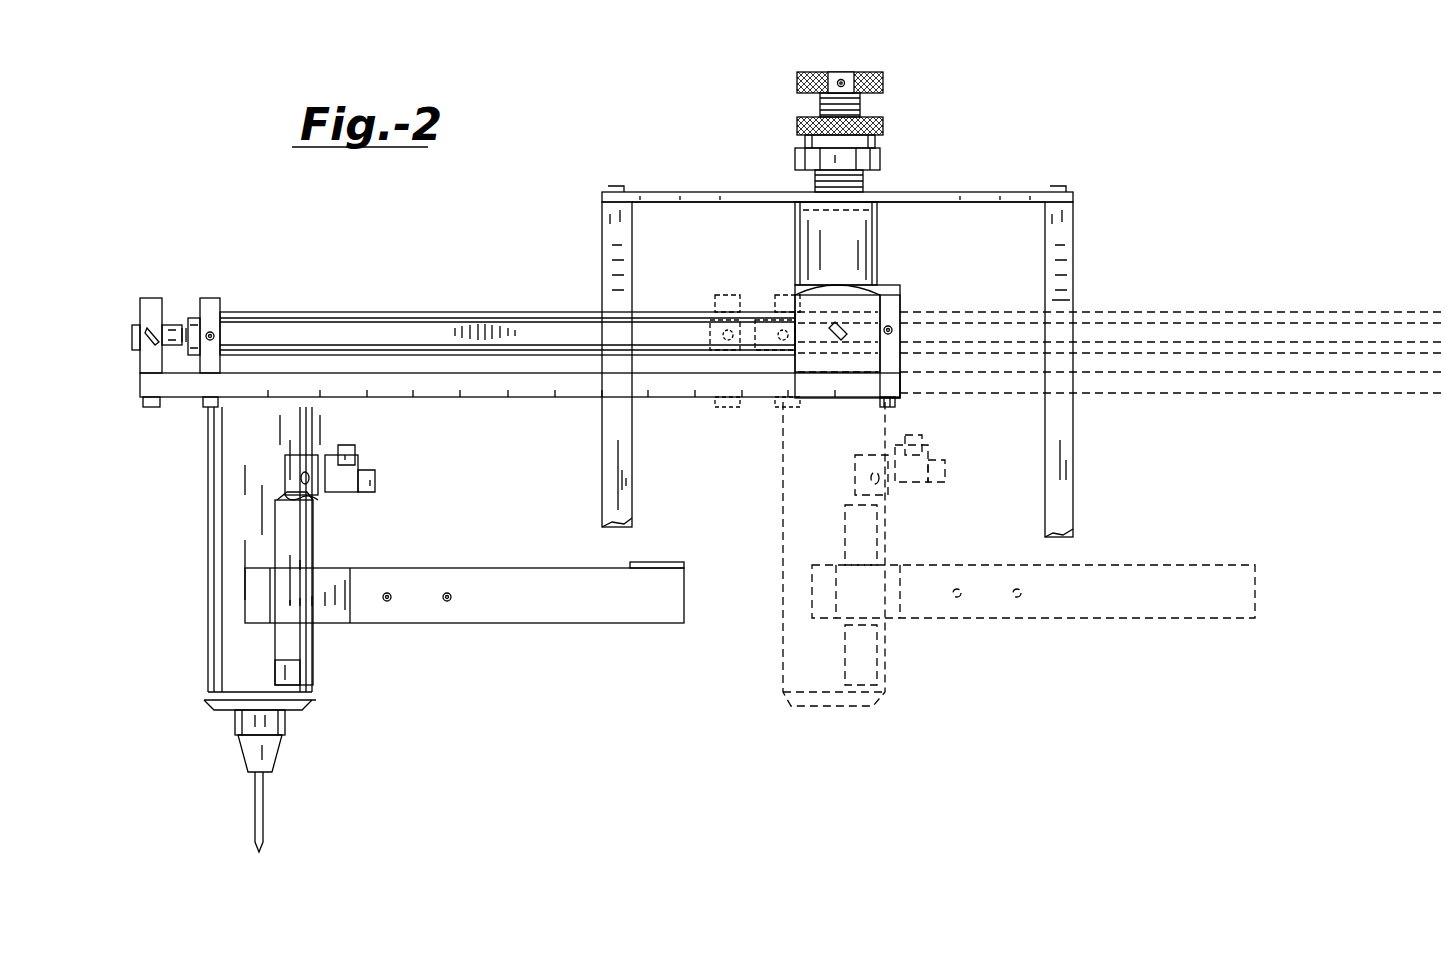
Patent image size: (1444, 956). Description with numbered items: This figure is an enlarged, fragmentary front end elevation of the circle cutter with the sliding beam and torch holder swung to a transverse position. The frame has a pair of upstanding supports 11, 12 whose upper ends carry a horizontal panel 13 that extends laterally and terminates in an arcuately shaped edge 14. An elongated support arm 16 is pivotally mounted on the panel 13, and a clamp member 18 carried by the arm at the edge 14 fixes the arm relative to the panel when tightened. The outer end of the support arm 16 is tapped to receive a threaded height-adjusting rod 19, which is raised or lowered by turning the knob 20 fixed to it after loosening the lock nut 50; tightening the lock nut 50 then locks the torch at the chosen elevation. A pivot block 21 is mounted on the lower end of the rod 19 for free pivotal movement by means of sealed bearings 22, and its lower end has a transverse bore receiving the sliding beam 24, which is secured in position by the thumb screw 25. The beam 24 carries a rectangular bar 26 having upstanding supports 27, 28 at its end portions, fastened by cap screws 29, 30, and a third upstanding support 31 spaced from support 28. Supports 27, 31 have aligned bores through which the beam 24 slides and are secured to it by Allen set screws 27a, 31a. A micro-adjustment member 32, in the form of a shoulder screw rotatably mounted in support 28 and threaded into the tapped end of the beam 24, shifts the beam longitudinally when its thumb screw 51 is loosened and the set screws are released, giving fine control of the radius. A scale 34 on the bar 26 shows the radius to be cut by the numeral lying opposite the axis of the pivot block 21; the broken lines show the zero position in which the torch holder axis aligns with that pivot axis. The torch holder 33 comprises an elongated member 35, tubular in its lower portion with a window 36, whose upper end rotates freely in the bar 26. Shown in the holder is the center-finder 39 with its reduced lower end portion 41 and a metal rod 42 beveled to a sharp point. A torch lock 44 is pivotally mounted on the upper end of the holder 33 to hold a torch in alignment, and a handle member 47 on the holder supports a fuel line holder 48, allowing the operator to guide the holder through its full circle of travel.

The upstanding support 11 is at (602, 248).
The upstanding support 12 is at (1073, 240).
The horizontal panel 13 is at (688, 194).
The arcuately shaped edge 14 is at (683, 202).
The support arm 16 is at (890, 160).
The clamp member 18 is at (797, 187).
The threaded height-adjusting rod 19 is at (861, 105).
The knob 20 is at (880, 80).
The pivot block 21 is at (886, 290).
The sealed bearings 22 is at (877, 236).
The sliding beam 24 is at (508, 308).
The thumb screw 25 is at (840, 337).
The rectangular bar 26 is at (542, 401).
The upstanding rectangular support 27 is at (900, 300).
The Allen set screw 27a is at (893, 330).
The upstanding rectangular support 28 is at (150, 298).
The cap screw 29 is at (893, 408).
The cap screw 30 is at (207, 407).
The third upstanding support 31 is at (214, 298).
The Allen set screw 31a is at (214, 335).
The micro-adjustment member 32 is at (137, 325).
The torch holder 33 is at (456, 629).
The scale 34 is at (678, 398).
The elongated member 35 is at (208, 630).
The window 36 is at (290, 555).
The center-finder 39 is at (290, 666).
The reduced lower end portion 41 is at (284, 722).
The metal rod 42 is at (265, 825).
The torch lock 44 is at (370, 464).
The handle member 47 is at (680, 600).
The fuel line holder 48 is at (654, 564).
The lock nut 50 is at (883, 125).
The thumb screw 51 is at (150, 345).